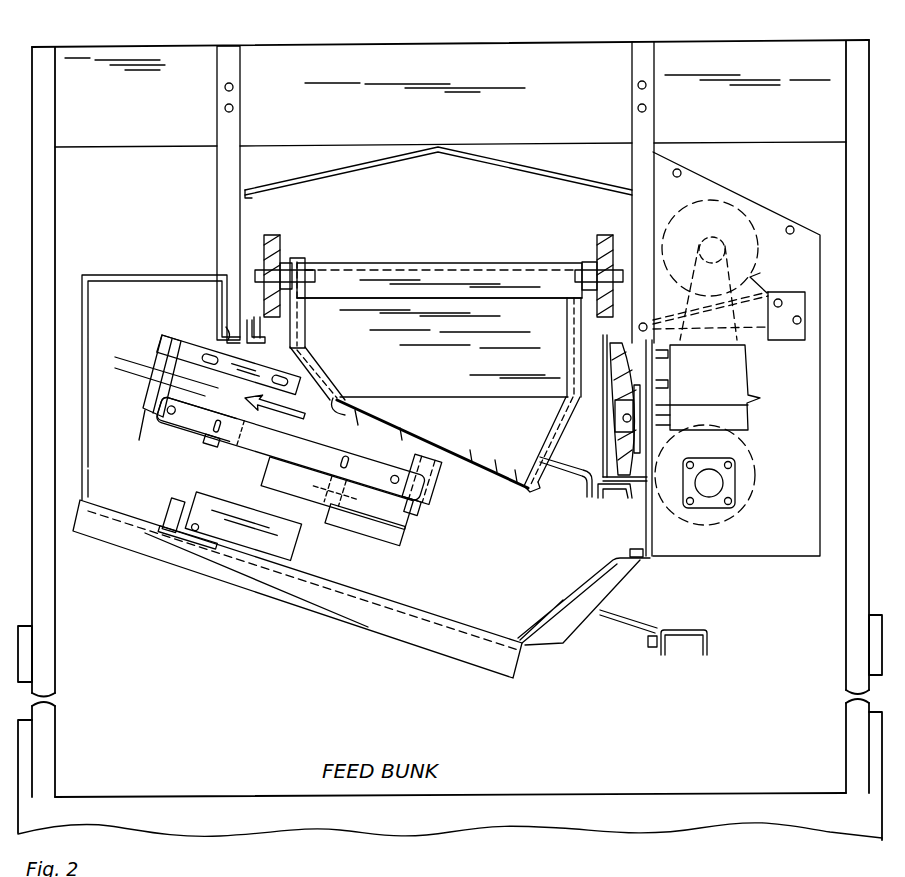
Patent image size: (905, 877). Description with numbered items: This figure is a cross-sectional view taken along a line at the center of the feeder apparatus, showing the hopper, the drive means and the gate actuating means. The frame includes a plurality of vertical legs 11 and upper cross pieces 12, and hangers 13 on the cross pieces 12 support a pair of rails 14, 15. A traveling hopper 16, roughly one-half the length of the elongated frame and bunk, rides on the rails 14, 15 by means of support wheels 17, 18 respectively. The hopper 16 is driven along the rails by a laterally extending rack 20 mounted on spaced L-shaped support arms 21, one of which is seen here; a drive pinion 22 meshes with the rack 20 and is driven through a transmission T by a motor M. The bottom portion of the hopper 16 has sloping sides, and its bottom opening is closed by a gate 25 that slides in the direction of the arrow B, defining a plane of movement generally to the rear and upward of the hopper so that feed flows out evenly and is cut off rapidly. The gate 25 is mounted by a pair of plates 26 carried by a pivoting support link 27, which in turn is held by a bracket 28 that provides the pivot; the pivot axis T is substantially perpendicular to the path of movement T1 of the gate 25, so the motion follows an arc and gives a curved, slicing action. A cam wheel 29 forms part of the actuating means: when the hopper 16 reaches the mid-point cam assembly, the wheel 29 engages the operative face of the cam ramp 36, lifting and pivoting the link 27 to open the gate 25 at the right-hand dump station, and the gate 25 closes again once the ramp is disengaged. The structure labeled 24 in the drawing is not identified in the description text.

The vertical legs 11 is at (50, 228).
The upper cross pieces 12 is at (428, 70).
The hangers 13 is at (222, 184).
The rail 14 is at (260, 338).
The rail 15 is at (590, 333).
The traveling hopper 16 is at (405, 285).
The support wheel 17 is at (270, 237).
The support wheel 18 is at (606, 230).
The rack 20 is at (600, 490).
The L-shaped support arm 21 is at (556, 432).
The drive pinion 22 is at (608, 387).
The tray 24 is at (390, 589).
The gate 25 is at (420, 452).
The plates 26 is at (445, 465).
The pivoting support link 27 is at (180, 422).
The bracket 28 is at (216, 346).
The cam wheel 29 is at (392, 535).
The cam ramp 36 is at (310, 528).
The motor M is at (758, 256).
The transmission T is at (710, 381).
The path of movement T1 is at (150, 370).
The arrow B is at (268, 425).